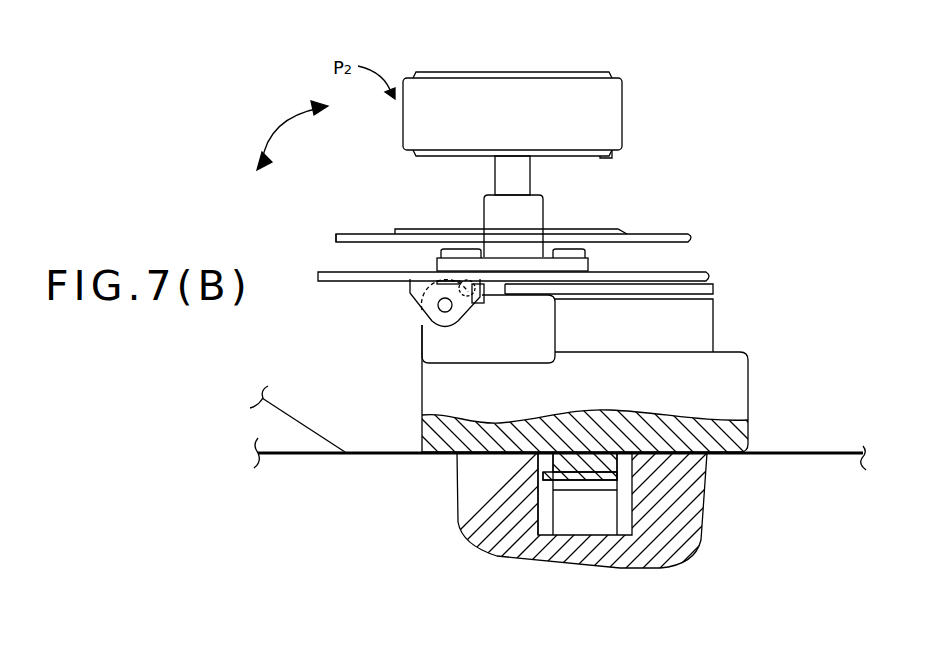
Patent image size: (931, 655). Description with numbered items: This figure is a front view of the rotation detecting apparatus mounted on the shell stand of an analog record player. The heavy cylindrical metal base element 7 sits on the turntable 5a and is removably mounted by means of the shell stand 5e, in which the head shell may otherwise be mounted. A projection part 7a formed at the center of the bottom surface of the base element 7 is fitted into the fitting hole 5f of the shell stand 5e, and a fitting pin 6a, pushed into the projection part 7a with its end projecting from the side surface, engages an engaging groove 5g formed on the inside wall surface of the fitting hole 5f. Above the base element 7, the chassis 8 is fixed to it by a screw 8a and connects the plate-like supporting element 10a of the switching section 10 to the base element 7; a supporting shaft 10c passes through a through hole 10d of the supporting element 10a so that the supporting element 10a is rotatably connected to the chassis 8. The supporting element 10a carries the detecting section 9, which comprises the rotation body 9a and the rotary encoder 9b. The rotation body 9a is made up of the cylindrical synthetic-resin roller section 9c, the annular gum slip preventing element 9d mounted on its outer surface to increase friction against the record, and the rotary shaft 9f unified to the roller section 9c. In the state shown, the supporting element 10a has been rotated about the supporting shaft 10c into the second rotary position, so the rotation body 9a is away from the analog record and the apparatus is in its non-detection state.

The turntable 5a is at (302, 415).
The shell stand 5e is at (604, 540).
The fitting hole 5f is at (571, 527).
The engaging groove 5g is at (541, 522).
The fitting pin 6a is at (563, 484).
The base element 7 is at (740, 391).
The projection part 7a is at (570, 481).
The chassis 8 is at (713, 295).
The screw 8a is at (507, 295).
The detecting section 9 is at (408, 184).
The rotation body 9a is at (582, 68).
The rotary encoder 9b is at (340, 232).
The roller section 9c is at (600, 158).
The slip preventing element 9d is at (622, 112).
The rotary shaft 9f is at (530, 178).
The switching section 10 is at (398, 290).
The supporting element 10a is at (700, 270).
The supporting shaft 10c is at (432, 300).
The through hole 10d is at (440, 307).